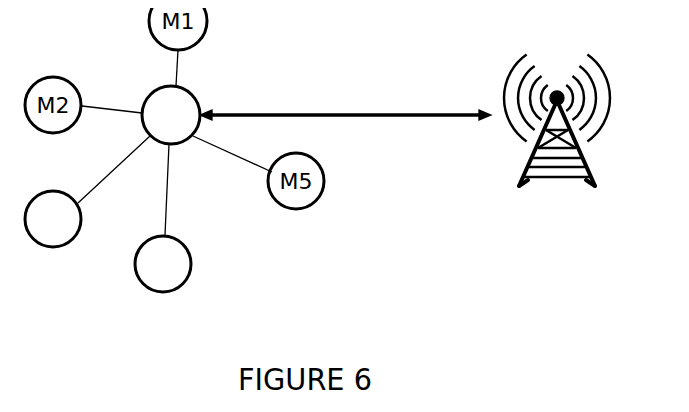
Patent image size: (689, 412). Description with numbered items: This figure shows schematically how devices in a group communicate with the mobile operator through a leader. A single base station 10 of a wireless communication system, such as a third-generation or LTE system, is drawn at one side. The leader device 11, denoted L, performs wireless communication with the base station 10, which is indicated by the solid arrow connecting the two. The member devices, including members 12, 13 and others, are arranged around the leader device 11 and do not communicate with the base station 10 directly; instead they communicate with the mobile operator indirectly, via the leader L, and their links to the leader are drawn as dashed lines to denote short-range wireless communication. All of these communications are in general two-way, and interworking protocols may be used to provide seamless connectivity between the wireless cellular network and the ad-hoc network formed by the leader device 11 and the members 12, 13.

The base station 10 is at (557, 144).
The leader device 11 is at (316, 114).
The member device 12 is at (44, 217).
The member device 13 is at (177, 271).